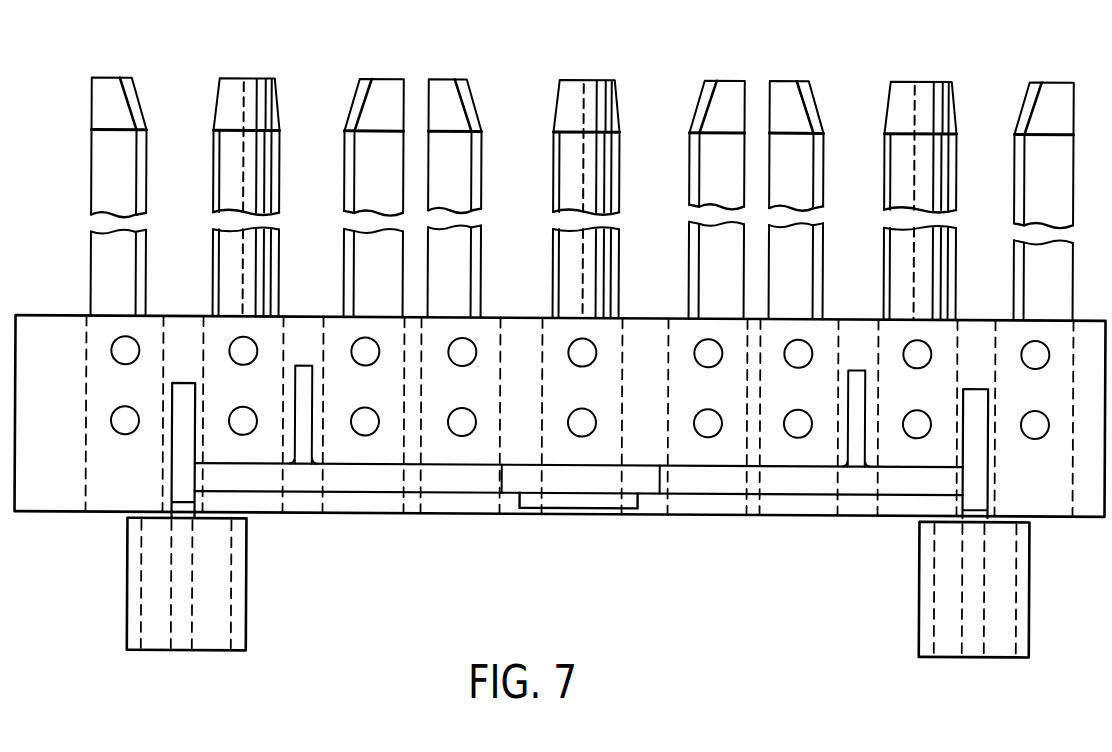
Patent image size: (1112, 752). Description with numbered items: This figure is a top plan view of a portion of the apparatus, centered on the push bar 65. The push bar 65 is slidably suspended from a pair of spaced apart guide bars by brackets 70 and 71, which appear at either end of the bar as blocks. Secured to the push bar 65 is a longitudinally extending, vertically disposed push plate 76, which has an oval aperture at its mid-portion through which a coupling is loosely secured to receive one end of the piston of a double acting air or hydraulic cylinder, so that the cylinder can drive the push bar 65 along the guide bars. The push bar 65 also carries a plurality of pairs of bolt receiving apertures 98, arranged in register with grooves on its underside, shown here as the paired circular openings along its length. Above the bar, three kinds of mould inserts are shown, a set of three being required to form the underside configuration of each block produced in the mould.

The push bar 65 is at (73, 506).
The bracket 70 is at (233, 563).
The bracket 71 is at (933, 583).
The push plate 76 is at (358, 481).
The bolt receiving apertures 98 is at (121, 356).